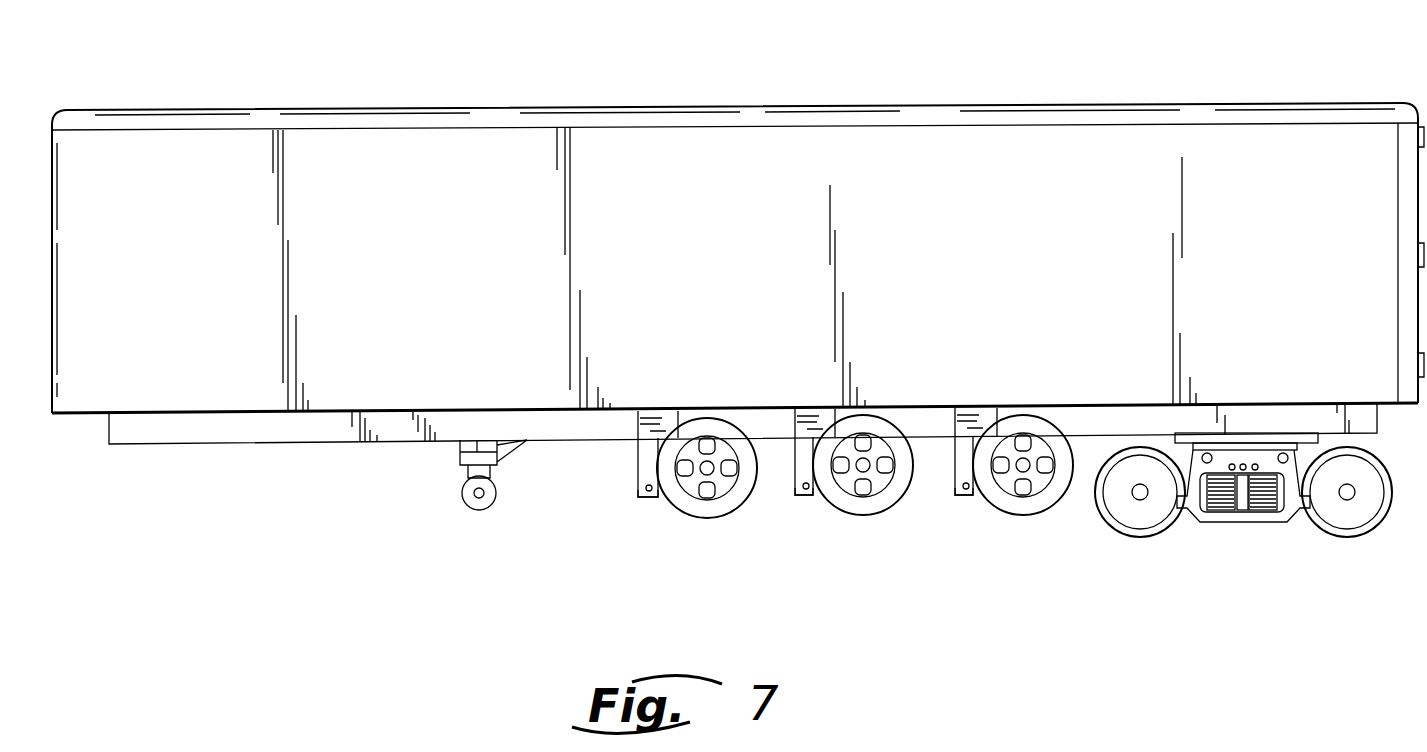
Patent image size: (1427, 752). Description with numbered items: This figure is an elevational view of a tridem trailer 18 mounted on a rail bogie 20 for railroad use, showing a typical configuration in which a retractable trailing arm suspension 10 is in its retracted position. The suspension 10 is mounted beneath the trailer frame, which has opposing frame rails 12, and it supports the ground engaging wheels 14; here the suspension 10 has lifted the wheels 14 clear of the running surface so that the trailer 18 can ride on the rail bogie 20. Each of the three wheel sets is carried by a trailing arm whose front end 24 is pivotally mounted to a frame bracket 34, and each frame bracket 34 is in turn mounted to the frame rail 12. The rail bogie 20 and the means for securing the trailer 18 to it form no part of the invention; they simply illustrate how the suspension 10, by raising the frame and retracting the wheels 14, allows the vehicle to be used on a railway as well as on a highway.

The retractable trailing arm suspension system 10 is at (838, 510).
The frame rail 12 is at (567, 434).
The ground engaging wheel 14 is at (722, 516).
The tridem trailer 18 is at (775, 160).
The rail bogie 20 is at (1239, 534).
The front end of trailing arm 24 is at (644, 500).
The frame bracket 34 is at (638, 466).